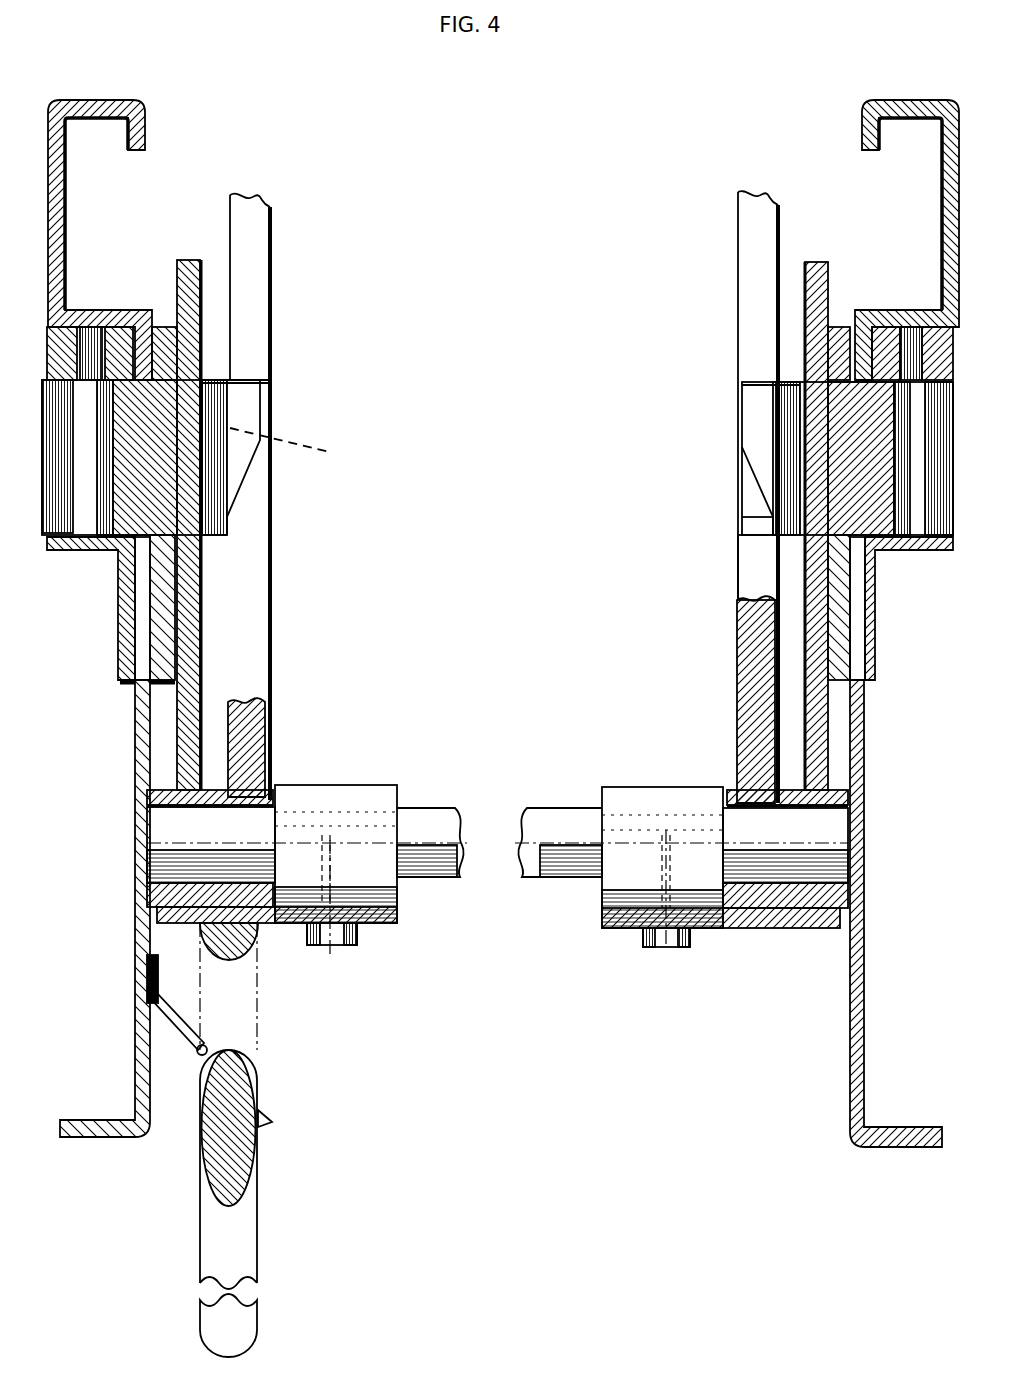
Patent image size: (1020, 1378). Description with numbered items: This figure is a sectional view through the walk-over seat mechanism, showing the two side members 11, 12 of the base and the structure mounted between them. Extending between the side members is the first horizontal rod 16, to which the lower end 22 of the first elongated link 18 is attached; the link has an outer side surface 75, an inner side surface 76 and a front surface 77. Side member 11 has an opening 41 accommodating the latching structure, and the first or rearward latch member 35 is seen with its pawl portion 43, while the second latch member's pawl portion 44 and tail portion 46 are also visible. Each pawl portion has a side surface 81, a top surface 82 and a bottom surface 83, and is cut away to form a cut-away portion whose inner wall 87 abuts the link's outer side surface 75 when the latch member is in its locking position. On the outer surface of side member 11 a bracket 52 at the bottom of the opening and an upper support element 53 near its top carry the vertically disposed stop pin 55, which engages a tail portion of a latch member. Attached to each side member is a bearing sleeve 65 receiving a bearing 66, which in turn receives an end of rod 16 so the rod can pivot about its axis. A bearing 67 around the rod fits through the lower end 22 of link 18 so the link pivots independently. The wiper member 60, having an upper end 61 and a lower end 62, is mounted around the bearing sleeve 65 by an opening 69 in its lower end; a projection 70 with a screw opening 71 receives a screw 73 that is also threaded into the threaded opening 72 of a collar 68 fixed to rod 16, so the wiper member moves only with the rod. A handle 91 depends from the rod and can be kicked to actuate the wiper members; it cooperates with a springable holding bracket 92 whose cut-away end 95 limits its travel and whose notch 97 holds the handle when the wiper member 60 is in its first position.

The side member 11 is at (135, 712).
The side member 12 is at (866, 708).
The first horizontal rod 16 is at (430, 810).
The first elongated link 18 is at (268, 560).
The lower end of first elongated link 22 is at (250, 760).
The first or rearward latch member 35 is at (240, 378).
The opening 41 is at (128, 545).
The pawl portion 43 is at (60, 428).
The pawl portion 44 is at (97, 513).
The tail portion 46 is at (157, 485).
The bracket 52 is at (120, 612).
The upper support element 53 is at (62, 340).
The stop pin 55 is at (230, 540).
The wiper member 60 is at (228, 610).
The upper end of wiper member 61 is at (177, 270).
The lower end of wiper member 62 is at (150, 908).
The bearing sleeve 65 is at (150, 790).
The bearing 66 is at (150, 818).
The bearing 67 is at (260, 790).
The collar 68 is at (380, 787).
The opening 69 is at (193, 895).
The projection 70 is at (380, 923).
The screw opening 71 is at (395, 905).
The threaded opening 72 is at (326, 870).
The screw 73 is at (333, 945).
The outer side surface 75 is at (229, 200).
The inner side surface 76 is at (273, 252).
The front surface 77 is at (258, 232).
The side surface 81 is at (263, 385).
The top surface 82 is at (208, 378).
The bottom surface 83 is at (200, 608).
The inner wall 87 is at (290, 445).
The handle 91 is at (250, 1210).
The holding bracket 92 is at (180, 1035).
The end of cut-away portion 95 is at (210, 1048).
The notch 97 is at (200, 1058).